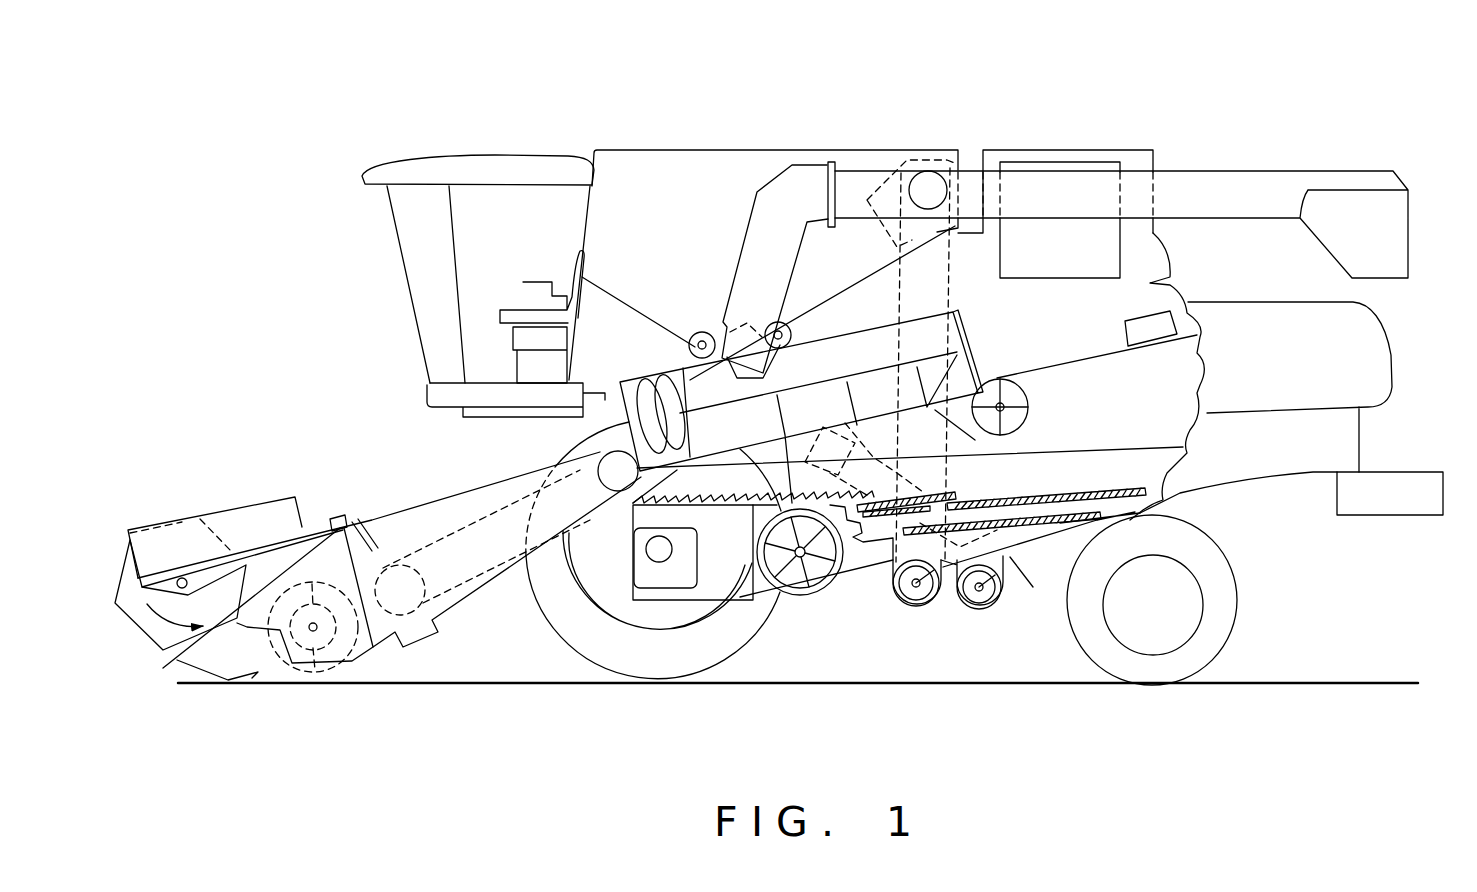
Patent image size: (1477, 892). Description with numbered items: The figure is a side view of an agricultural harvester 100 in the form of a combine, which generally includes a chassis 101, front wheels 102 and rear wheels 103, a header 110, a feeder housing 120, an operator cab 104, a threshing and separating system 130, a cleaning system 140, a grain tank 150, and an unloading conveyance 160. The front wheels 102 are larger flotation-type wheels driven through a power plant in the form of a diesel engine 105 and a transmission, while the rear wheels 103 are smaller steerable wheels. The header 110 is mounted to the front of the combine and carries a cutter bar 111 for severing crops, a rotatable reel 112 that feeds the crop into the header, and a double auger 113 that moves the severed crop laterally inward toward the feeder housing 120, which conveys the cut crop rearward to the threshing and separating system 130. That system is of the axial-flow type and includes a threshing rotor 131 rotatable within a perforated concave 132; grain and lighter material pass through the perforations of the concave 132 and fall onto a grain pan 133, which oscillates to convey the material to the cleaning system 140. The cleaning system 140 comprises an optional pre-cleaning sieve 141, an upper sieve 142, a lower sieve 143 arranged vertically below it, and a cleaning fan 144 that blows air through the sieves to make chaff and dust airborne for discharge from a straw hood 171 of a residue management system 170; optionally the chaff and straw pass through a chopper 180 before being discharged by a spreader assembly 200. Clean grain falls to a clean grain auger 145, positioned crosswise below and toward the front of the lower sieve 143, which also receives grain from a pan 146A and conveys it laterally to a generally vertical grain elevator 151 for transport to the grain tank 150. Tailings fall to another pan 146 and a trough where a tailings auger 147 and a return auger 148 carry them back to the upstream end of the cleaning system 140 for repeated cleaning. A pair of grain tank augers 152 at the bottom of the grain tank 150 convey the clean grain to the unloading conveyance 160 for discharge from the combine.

The agricultural harvester 100 is at (467, 132).
The chassis 101 is at (1130, 520).
The front wheels 102 is at (558, 632).
The rear wheels 103 is at (1233, 620).
The operator cab 104 is at (403, 262).
The diesel engine 105 is at (1047, 165).
The header 110 is at (218, 492).
The cutter bar 111 is at (238, 685).
The rotatable reel 112 is at (125, 578).
The double auger 113 is at (318, 650).
The feeder housing 120 is at (440, 505).
The threshing and separating system 130 is at (743, 449).
The threshing rotor 131 is at (632, 385).
The perforated concave 132 is at (832, 368).
The grain pan 133 is at (633, 507).
The cleaning system 140 is at (889, 577).
The pre-cleaning sieve 141 is at (950, 490).
The upper sieve 142 is at (1060, 490).
The lower sieve 143 is at (1033, 587).
The cleaning fan 144 is at (792, 597).
The clean grain auger 145 is at (920, 597).
The pan 146 is at (1068, 540).
The pan 146A is at (1068, 577).
The tailings auger 147 is at (977, 612).
The return auger 148 is at (882, 472).
The grain tank 150 is at (651, 157).
The grain elevator 151 is at (952, 292).
The grain tank augers 152 is at (697, 332).
The unloading conveyance 160 is at (1253, 180).
The residue management system 170 is at (1334, 536).
The straw hood 171 is at (1372, 347).
The chopper 180 is at (1115, 340).
The spreader assembly 200 is at (1416, 467).